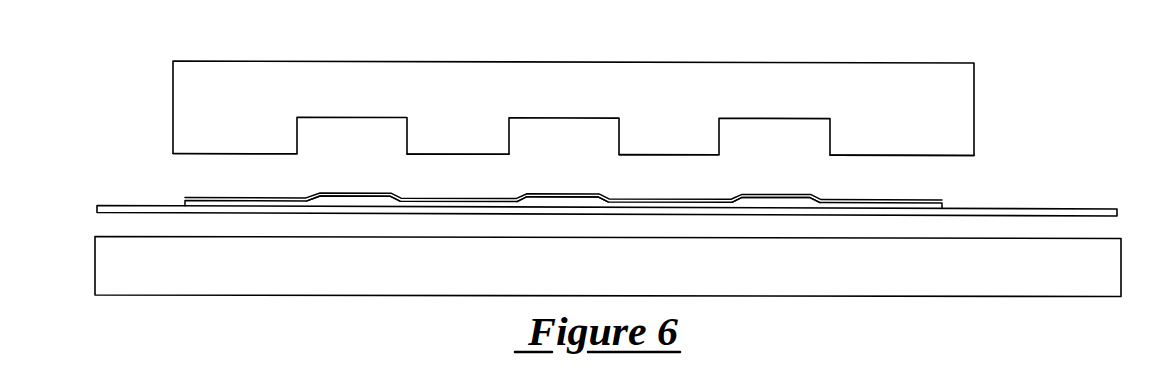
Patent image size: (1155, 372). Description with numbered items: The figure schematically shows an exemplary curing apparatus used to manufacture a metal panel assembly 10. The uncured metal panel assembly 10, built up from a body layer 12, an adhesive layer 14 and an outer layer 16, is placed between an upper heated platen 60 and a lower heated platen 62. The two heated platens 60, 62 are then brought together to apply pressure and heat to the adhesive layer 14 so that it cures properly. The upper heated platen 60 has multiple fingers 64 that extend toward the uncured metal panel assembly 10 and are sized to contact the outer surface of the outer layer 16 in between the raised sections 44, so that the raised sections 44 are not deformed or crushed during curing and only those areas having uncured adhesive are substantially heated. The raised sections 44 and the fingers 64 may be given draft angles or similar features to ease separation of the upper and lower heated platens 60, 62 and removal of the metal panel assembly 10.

The metal panel assembly 10 is at (1052, 116).
The body layer 12 is at (1025, 207).
The adhesive layer 14 is at (895, 207).
The outer layer 16 is at (786, 190).
The raised sections 44 is at (355, 188).
The upper heated platen 60 is at (905, 80).
The lower heated platen 62 is at (962, 270).
The fingers 64 is at (235, 127).